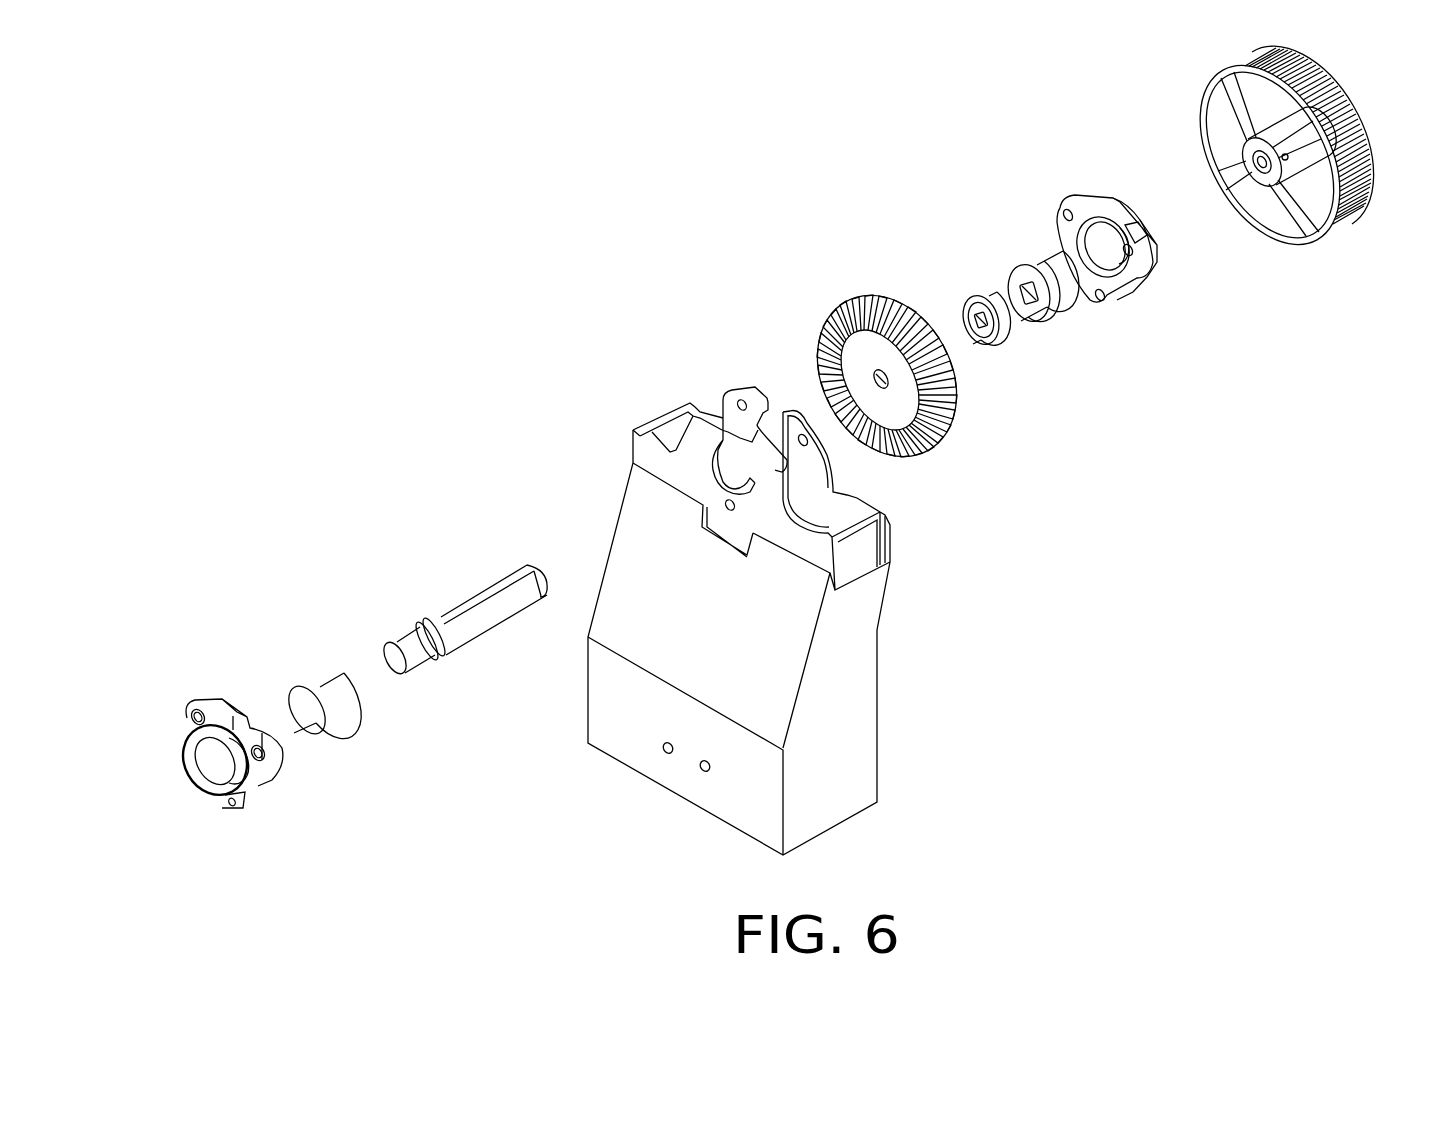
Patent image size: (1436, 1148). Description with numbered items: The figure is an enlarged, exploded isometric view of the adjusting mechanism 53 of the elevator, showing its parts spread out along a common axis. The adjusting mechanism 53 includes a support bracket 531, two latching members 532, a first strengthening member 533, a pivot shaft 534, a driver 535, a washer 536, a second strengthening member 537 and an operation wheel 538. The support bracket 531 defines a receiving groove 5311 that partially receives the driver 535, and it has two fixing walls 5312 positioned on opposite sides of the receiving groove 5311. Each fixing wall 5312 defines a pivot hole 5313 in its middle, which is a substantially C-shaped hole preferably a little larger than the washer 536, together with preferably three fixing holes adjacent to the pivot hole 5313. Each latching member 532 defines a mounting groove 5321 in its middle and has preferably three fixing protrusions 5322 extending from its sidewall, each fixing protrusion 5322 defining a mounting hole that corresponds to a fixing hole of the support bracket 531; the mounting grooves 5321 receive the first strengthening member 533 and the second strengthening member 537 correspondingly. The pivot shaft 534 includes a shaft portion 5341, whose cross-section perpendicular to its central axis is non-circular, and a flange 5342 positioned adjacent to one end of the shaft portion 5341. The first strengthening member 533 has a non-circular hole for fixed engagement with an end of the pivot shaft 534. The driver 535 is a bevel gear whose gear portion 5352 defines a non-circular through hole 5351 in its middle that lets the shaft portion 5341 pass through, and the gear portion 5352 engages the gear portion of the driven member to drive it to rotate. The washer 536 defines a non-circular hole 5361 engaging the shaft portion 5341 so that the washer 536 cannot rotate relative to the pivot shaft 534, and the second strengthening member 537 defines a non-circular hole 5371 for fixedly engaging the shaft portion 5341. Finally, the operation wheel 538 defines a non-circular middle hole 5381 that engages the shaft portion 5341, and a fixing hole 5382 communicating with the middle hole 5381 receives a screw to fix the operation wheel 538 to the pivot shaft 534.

The adjusting mechanism 53 is at (583, 213).
The support bracket 531 is at (894, 667).
The receiving groove 5311 is at (665, 420).
The fixing walls 5312 is at (737, 398).
The pivot hole 5313 is at (778, 437).
The latching members 532 is at (197, 684).
The mounting groove 5321 is at (1098, 238).
The fixing protrusions 5322 is at (1143, 247).
The first strengthening member 533 is at (303, 646).
The pivot shaft 534 is at (447, 586).
The shaft portion 5341 is at (497, 607).
The flange 5342 is at (440, 660).
The driver 535 is at (946, 480).
The through hole 5351 is at (872, 368).
The gear portion 5352 is at (935, 447).
The washer 536 is at (1001, 380).
The non-circular hole 5361 is at (968, 312).
The second strengthening member 537 is at (1061, 345).
The non-circular hole 5371 is at (1025, 290).
The operation wheel 538 is at (1351, 252).
The middle hole 5381 is at (1268, 178).
The fixing hole 5382 is at (1257, 155).